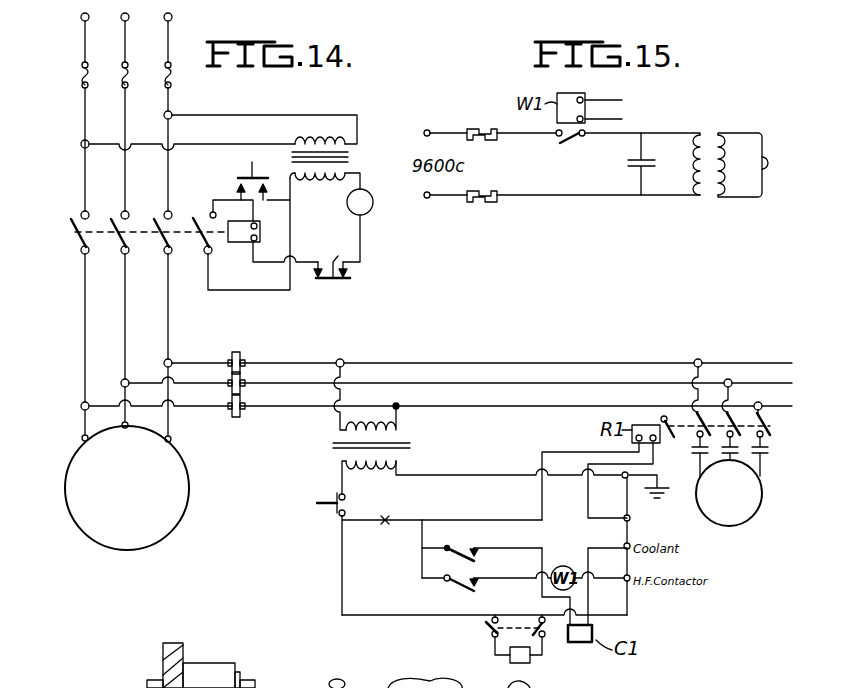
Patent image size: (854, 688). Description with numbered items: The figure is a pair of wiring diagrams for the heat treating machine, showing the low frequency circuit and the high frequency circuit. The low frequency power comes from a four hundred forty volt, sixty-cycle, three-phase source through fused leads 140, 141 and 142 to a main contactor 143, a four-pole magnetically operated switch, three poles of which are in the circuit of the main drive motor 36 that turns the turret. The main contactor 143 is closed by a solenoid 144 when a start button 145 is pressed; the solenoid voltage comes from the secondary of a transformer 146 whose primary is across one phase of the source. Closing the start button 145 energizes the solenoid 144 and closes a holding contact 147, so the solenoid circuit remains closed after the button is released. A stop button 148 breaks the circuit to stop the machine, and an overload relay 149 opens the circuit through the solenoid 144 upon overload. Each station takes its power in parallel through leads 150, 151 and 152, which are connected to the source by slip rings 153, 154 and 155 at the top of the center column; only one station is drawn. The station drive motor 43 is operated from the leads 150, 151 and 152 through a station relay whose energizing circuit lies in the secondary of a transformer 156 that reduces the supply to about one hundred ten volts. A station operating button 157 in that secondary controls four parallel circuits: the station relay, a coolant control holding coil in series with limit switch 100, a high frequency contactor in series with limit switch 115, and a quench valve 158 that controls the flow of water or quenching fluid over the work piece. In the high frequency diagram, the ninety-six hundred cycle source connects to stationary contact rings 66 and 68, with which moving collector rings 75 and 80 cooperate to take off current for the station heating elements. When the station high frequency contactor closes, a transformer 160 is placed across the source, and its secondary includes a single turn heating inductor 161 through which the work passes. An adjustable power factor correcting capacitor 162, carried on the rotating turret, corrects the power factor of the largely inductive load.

In FIG. 14, the fused lead 140 is at (83, 46).
In FIG. 14, the fused lead 141 is at (124, 43).
In FIG. 14, the fused lead 142 is at (166, 43).
In FIG. 14, the main contactor 143 is at (74, 238).
In FIG. 14, the solenoid 144 is at (240, 245).
In FIG. 14, the start button 145 is at (248, 172).
In FIG. 14, the transformer 146 is at (350, 152).
In FIG. 14, the holding contact 147 is at (204, 240).
In FIG. 14, the stop button 148 is at (336, 260).
In FIG. 14, the overload relay 149 is at (368, 213).
In FIG. 14, the lead 150 is at (310, 361).
In FIG. 14, the lead 151 is at (305, 382).
In FIG. 14, the lead 152 is at (305, 405).
In FIG. 14, the slip ring 153 is at (230, 357).
In FIG. 14, the slip ring 154 is at (230, 383).
In FIG. 14, the slip ring 155 is at (230, 406).
In FIG. 14, the transformer 156 is at (334, 432).
In FIG. 14, the station operating button 157 is at (330, 517).
In FIG. 14, the quench valve 158 is at (528, 663).
In FIG. 14, the main drive motor 36 is at (168, 516).
In FIG. 14, the limit switch 100 is at (462, 552).
In FIG. 14, the limit switch 115 is at (462, 580).
In FIG. 14, the station drive motor 43 is at (744, 498).
In FIG. 15, the stationary contact ring 66 is at (476, 126).
In FIG. 15, the moving collector ring 75 is at (486, 140).
In FIG. 15, the stationary contact ring 68 is at (474, 204).
In FIG. 15, the moving collector ring 80 is at (490, 203).
In FIG. 15, the transformer 160 is at (700, 142).
In FIG. 15, the single turn heating inductor 161 is at (769, 163).
In FIG. 15, the power factor correcting capacitor 162 is at (637, 178).